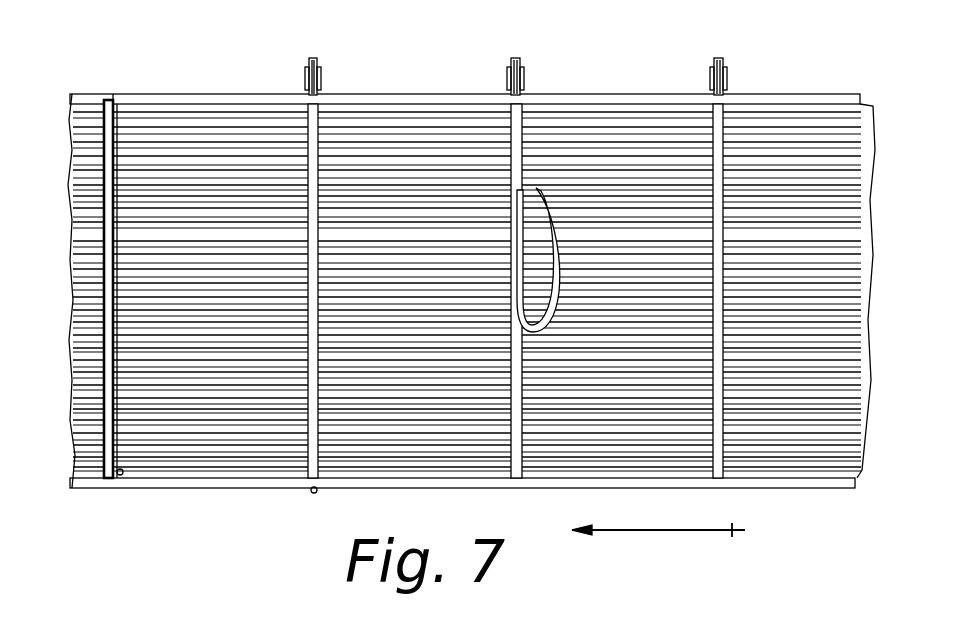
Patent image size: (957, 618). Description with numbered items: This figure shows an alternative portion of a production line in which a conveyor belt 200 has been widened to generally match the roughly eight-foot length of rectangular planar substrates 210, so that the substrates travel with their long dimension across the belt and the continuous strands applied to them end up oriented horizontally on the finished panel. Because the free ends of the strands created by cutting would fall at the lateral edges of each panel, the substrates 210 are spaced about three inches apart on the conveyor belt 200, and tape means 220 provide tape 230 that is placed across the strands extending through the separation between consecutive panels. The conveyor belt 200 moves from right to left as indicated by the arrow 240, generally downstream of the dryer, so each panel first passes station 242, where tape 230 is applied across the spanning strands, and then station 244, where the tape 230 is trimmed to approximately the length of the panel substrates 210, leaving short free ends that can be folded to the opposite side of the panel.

The conveyor belt 200 is at (257, 488).
The substrates 210 is at (217, 102).
The tape means 220 is at (312, 57).
The tape 230 is at (124, 475).
The arrow 240 is at (636, 538).
The station 242 is at (519, 480).
The station 244 is at (103, 489).